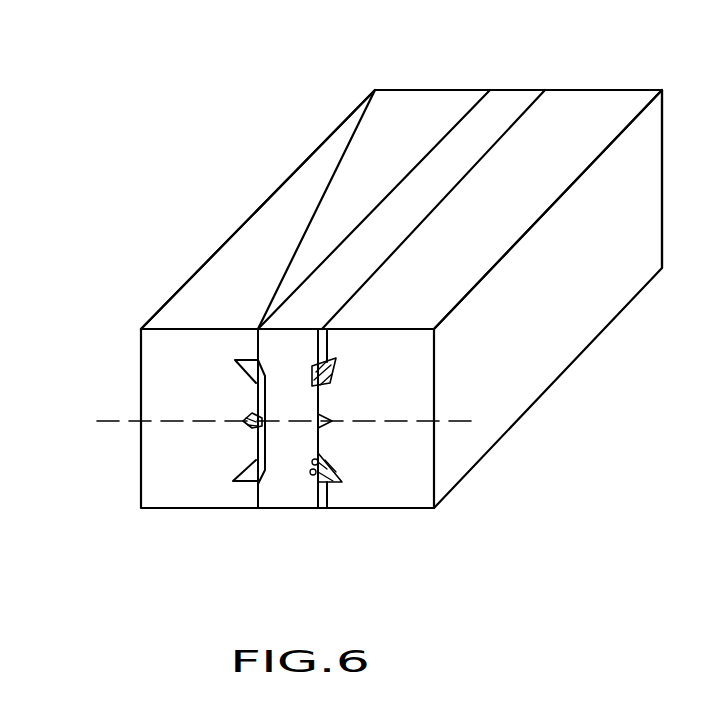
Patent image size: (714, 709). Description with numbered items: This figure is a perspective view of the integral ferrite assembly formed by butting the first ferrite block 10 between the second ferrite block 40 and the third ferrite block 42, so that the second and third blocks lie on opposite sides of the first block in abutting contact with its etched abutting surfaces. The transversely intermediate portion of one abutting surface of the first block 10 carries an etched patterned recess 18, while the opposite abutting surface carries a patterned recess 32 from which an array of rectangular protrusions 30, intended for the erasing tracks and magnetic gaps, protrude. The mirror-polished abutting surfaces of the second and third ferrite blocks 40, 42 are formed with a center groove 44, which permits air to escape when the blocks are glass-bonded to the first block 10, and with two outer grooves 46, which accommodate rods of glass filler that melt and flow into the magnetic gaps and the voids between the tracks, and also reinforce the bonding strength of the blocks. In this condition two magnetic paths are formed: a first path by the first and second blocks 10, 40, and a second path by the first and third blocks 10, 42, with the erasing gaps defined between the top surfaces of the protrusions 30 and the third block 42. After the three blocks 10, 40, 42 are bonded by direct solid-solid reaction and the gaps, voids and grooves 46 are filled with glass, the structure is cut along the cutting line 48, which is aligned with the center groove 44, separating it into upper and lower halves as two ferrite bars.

The first ferrite block 10 is at (514, 97).
The patterned recess 18 is at (260, 437).
The rectangular protrusions 30 is at (306, 398).
The patterned recess 32 is at (323, 330).
The second ferrite block 40 is at (345, 150).
The third ferrite block 42 is at (620, 97).
The center groove 44 is at (248, 424).
The outer grooves 46 is at (250, 373).
The cutting line 48 is at (112, 422).